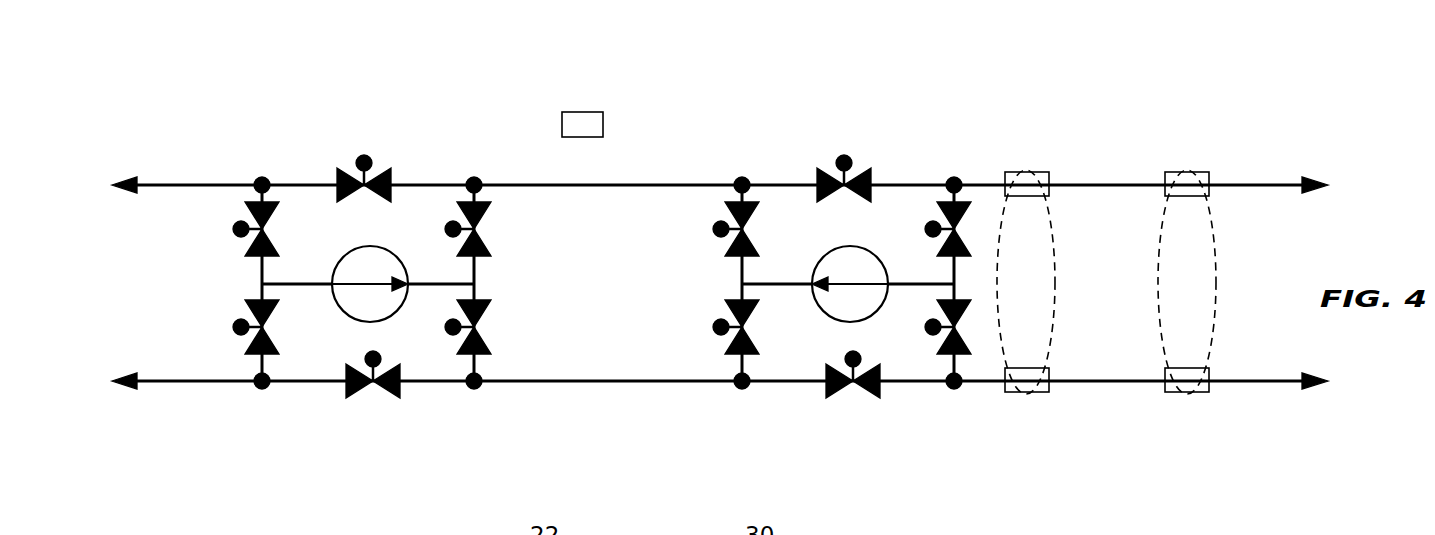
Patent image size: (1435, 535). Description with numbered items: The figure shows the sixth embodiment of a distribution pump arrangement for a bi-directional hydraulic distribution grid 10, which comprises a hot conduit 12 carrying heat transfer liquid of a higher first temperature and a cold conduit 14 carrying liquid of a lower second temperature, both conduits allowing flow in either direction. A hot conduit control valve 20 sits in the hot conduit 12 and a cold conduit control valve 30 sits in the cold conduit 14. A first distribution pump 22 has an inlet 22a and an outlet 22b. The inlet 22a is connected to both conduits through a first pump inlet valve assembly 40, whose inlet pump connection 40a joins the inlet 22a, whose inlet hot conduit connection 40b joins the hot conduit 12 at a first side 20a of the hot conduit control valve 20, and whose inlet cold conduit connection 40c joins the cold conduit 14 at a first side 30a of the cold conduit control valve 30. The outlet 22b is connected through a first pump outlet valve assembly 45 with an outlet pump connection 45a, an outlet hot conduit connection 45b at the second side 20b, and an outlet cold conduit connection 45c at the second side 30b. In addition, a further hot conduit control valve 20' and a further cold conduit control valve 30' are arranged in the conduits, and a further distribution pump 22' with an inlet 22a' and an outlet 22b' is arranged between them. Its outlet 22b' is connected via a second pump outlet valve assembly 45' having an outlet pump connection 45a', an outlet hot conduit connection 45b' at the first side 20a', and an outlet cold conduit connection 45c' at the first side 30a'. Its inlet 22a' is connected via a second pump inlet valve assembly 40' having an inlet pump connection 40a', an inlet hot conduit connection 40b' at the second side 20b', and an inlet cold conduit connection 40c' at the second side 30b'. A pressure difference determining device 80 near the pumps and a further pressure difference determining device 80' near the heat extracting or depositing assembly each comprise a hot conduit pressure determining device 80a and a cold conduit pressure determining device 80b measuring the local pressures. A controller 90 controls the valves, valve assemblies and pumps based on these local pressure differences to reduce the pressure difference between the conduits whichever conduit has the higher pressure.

The bi-directional hydraulic distribution grid 10 is at (208, 128).
The hot conduit 12 is at (168, 185).
The cold conduit 14 is at (172, 382).
The hot conduit control valve 20 is at (356, 129).
The first side of the hot conduit control valve 20a is at (227, 145).
The second side of the hot conduit control valve 20b is at (441, 145).
The further hot conduit control valve 20' is at (834, 129).
The first side of the further hot conduit control valve 20a' is at (705, 142).
The second side of the further hot conduit control valve 20b' is at (917, 144).
The first distribution pump 22 is at (370, 263).
The inlet of the first distribution pump 22a is at (297, 245).
The outlet of the first distribution pump 22b is at (435, 245).
The further distribution pump 22' is at (850, 262).
The inlet of the further distribution pump 22a' is at (913, 245).
The outlet of the further distribution pump 22b' is at (780, 245).
The cold conduit control valve 30 is at (373, 426).
The first side of the cold conduit control valve 30a is at (227, 409).
The second side of the cold conduit control valve 30b is at (456, 416).
The further cold conduit control valve 30' is at (853, 426).
The first side of the further cold conduit control valve 30a' is at (707, 410).
The second side of the further cold conduit control valve 30b' is at (933, 416).
The first pump inlet valve assembly 40 is at (192, 283).
The inlet pump connection 40a is at (311, 318).
The inlet hot conduit connection 40b is at (222, 221).
The inlet cold conduit connection 40c is at (217, 340).
The second pump inlet valve assembly 40' is at (991, 322).
The inlet pump connection 40a' is at (898, 318).
The inlet hot conduit connection 40b' is at (964, 165).
The inlet cold conduit connection 40c' is at (967, 401).
The first pump outlet valve assembly 45 is at (534, 283).
The outlet pump connection 45a is at (421, 318).
The outlet hot conduit connection 45b is at (514, 221).
The outlet cold conduit connection 45c is at (513, 341).
The second pump outlet valve assembly 45' is at (680, 283).
The outlet pump connection 45a' is at (793, 318).
The outlet hot conduit connection 45b' is at (701, 221).
The outlet cold conduit connection 45c' is at (694, 340).
The pressure difference determining device 80 is at (1060, 282).
The pressure difference determining device 80' is at (1227, 282).
The hot conduit pressure determining device 80a is at (1040, 172).
The cold conduit pressure determining device 80b is at (1045, 392).
The controller 90 is at (580, 120).